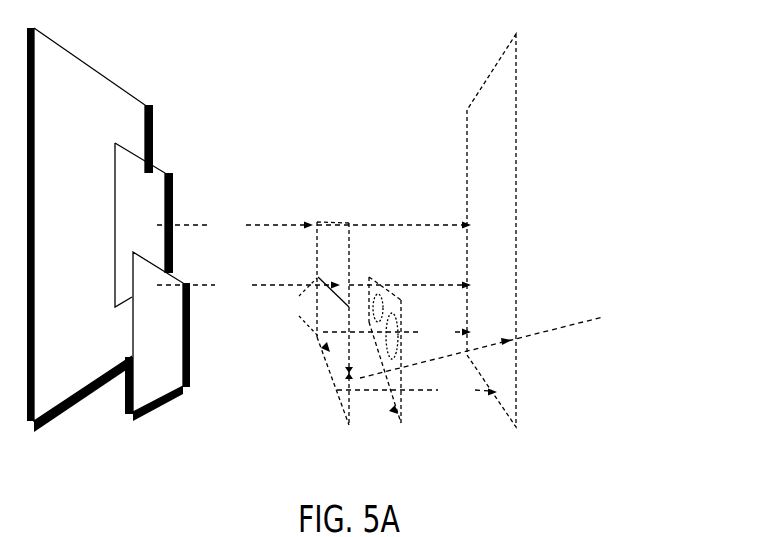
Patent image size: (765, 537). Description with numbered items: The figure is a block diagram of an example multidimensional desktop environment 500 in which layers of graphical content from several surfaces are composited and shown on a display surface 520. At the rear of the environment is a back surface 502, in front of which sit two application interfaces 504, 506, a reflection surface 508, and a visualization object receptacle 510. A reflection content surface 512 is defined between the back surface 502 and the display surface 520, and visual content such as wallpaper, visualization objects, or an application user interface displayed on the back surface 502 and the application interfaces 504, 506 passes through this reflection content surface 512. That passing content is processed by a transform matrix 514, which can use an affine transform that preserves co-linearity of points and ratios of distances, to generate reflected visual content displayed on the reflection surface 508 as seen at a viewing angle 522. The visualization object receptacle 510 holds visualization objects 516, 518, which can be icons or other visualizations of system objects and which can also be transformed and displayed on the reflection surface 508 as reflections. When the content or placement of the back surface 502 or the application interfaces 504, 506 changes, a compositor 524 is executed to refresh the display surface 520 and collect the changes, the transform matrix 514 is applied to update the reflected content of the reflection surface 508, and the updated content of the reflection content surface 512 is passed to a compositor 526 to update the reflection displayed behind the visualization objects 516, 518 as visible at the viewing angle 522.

The multidimensional desktop environment 500 is at (657, 105).
The back surface 502 is at (120, 117).
The application interface 504 is at (152, 195).
The application interface 506 is at (157, 373).
The reflection surface 508 is at (340, 370).
The visualization object receptacle 510 is at (395, 407).
The reflection content surface 512 is at (337, 240).
The transform matrix 514 is at (291, 307).
The visualization object 516 is at (395, 337).
The visualization object 518 is at (377, 305).
The display surface 520 is at (505, 137).
The viewing angle 522 is at (573, 320).
The compositor 524 is at (314, 256).
The compositor 526 is at (410, 363).